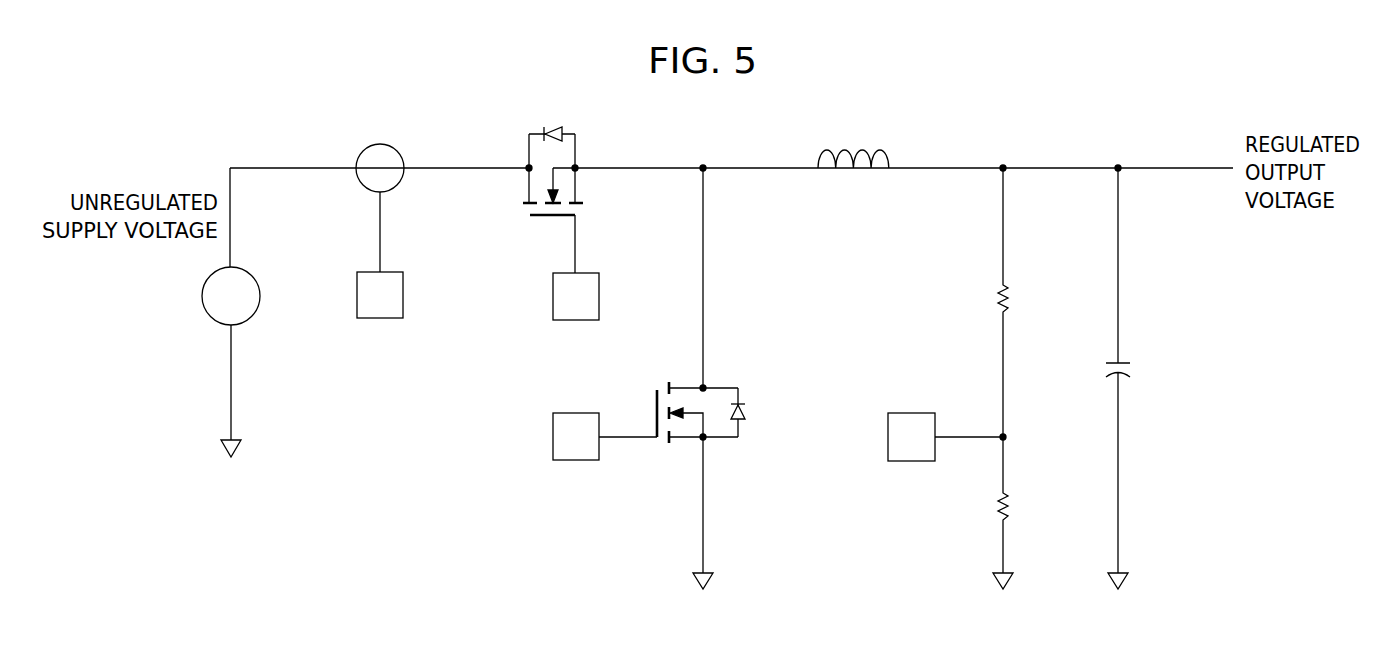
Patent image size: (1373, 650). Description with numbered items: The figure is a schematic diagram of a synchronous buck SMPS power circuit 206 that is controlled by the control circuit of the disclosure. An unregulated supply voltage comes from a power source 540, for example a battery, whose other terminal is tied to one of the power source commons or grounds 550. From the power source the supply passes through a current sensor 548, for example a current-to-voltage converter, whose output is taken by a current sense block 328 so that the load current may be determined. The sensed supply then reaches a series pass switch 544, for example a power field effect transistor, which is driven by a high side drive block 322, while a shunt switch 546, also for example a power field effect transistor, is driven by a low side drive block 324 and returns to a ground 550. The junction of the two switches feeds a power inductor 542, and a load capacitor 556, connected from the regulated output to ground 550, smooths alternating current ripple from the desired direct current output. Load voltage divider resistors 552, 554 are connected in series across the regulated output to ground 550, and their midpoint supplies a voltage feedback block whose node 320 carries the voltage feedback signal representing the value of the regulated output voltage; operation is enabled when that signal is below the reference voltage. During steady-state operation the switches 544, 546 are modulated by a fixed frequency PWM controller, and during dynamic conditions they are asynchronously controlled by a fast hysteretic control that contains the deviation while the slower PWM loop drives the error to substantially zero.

The synchronous buck SMPS power circuit 206 is at (345, 546).
The node 320 is at (910, 463).
The high side drive block 322 is at (553, 296).
The low side drive block 324 is at (553, 440).
The current sense block 328 is at (356, 296).
The power source 540 is at (201, 297).
The power inductor 542 is at (878, 151).
The series pass switch 544 is at (519, 121).
The shunt switch 546 is at (741, 461).
The current sensor 548 is at (372, 147).
The power source commons or grounds 550 is at (225, 451).
The load voltage divider resistor 552 is at (1008, 301).
The load voltage divider resistor 554 is at (1008, 511).
The load capacitor 556 is at (1133, 371).